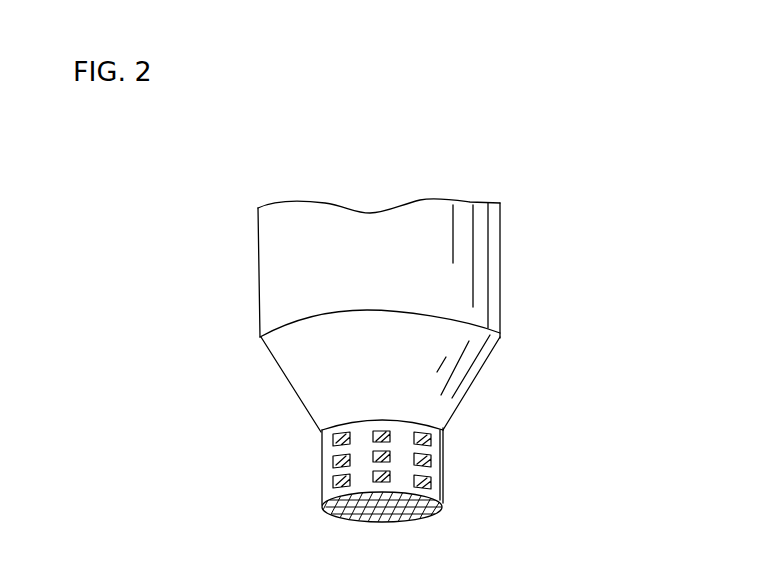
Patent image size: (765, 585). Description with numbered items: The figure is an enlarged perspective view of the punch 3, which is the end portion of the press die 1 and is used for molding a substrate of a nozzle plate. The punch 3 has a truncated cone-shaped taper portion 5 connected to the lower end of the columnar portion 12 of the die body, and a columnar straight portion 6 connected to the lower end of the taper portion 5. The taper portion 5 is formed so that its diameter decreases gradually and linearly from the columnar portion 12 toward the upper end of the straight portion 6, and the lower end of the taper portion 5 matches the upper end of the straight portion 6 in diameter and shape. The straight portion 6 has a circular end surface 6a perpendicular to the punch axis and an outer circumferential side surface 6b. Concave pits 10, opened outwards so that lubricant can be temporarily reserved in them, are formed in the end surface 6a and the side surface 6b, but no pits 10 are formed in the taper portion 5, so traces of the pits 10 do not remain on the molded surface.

The press die 1 is at (420, 360).
The columnar portion 12 is at (500, 271).
The taper portion 5 is at (494, 375).
The punch 3 is at (407, 440).
The straight portion 6 is at (403, 483).
The end surface 6a is at (330, 507).
The outer circumferential side surface 6b is at (322, 462).
The pits 10 is at (445, 436).